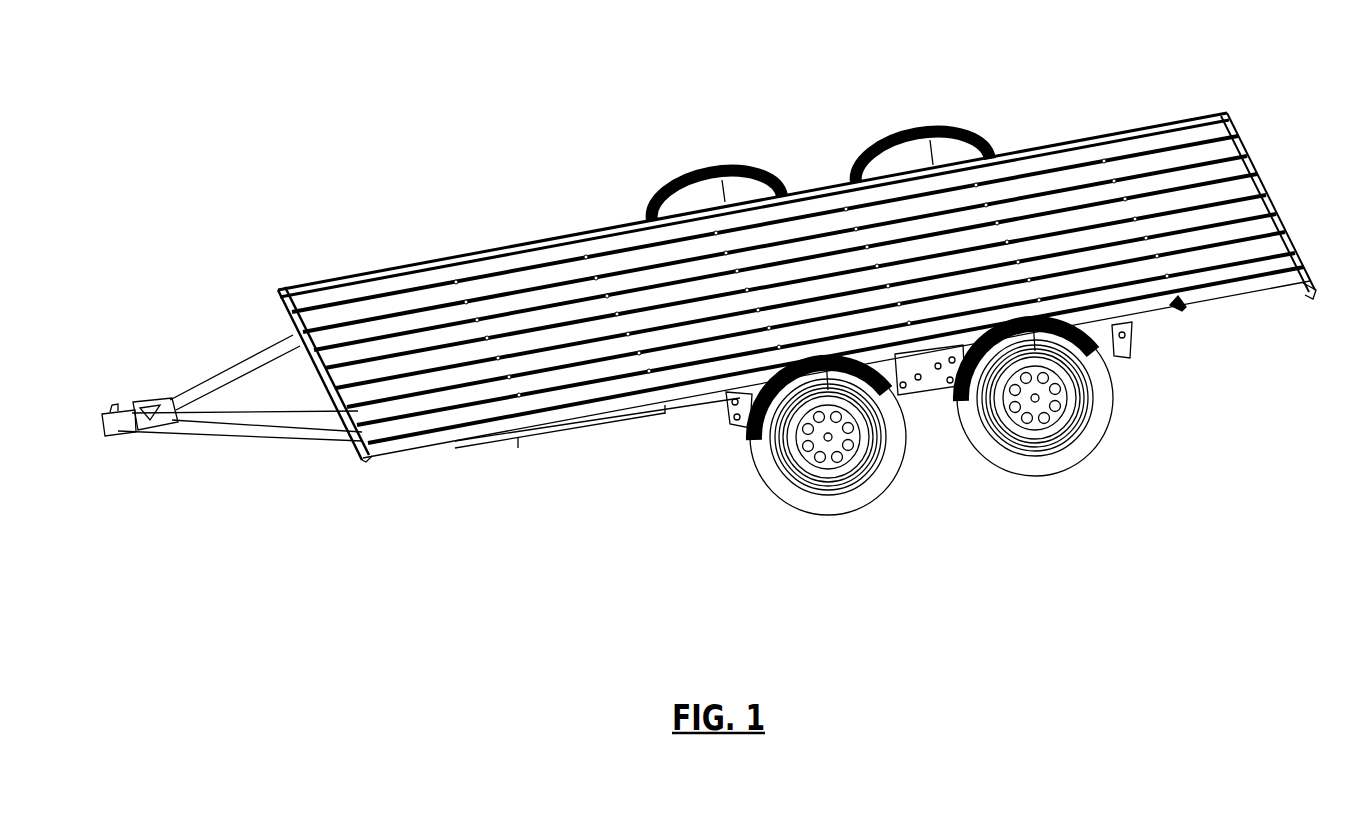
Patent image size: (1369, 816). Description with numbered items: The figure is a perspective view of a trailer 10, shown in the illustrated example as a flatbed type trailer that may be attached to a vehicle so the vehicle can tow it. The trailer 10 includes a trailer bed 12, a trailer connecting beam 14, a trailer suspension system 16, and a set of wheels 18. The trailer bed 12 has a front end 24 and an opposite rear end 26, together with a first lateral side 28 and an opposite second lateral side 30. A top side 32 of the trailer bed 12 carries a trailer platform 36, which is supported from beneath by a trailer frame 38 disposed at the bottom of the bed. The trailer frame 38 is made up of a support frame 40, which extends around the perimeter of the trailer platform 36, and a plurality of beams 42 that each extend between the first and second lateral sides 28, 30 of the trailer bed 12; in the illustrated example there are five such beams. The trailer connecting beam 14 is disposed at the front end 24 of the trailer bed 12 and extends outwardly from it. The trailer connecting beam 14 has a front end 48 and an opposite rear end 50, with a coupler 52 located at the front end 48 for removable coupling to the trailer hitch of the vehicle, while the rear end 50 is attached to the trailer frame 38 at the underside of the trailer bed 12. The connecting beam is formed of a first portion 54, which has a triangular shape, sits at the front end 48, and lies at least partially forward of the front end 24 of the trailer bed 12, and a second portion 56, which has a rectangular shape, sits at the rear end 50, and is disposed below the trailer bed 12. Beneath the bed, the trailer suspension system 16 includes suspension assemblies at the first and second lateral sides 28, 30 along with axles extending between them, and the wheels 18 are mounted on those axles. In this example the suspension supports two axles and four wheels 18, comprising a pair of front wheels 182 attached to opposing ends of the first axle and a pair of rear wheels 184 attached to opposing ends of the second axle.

The trailer 10 is at (228, 82).
The trailer bed 12 is at (525, 240).
The trailer connecting beam 14 is at (225, 362).
The trailer suspension system 16 is at (920, 388).
The set of wheels 18 is at (1118, 398).
The front end 24 is at (268, 315).
The rear end 26 is at (1285, 206).
The first lateral side 28 is at (1265, 295).
The second lateral side 30 is at (1047, 133).
The top side 32 is at (372, 290).
The trailer platform 36 is at (1170, 140).
The trailer frame 38 is at (375, 465).
The support frame 40 is at (455, 442).
The plurality of beams 42 is at (1177, 300).
The front end 48 is at (103, 440).
The rear end 50 is at (663, 425).
The coupler 52 is at (142, 430).
The first portion 54 is at (257, 435).
The second portion 56 is at (560, 440).
The front wheels 182 is at (840, 515).
The rear wheels 184 is at (1045, 475).